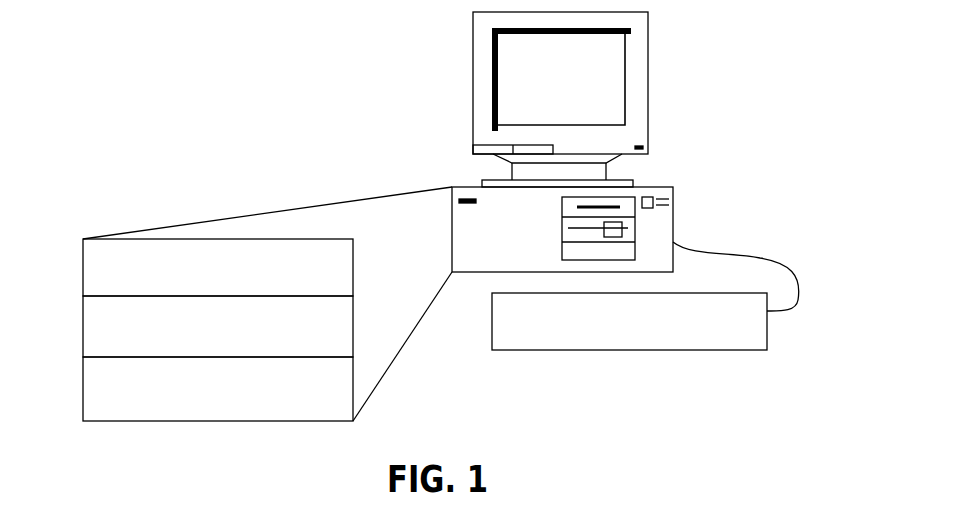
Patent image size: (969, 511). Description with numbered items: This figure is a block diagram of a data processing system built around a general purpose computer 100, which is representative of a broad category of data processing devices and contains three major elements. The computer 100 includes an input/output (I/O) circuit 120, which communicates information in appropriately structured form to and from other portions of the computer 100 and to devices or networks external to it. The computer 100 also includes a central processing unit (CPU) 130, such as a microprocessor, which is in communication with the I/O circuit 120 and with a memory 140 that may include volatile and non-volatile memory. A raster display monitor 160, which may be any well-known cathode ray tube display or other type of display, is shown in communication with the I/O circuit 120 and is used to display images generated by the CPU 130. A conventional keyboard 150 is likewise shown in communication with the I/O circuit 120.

The computer 100 is at (663, 223).
The input/output (I/O) circuit 120 is at (97, 397).
The central processing unit (CPU) 130 is at (97, 337).
The memory 140 is at (97, 278).
The keyboard 150 is at (755, 325).
The raster display monitor 160 is at (637, 82).